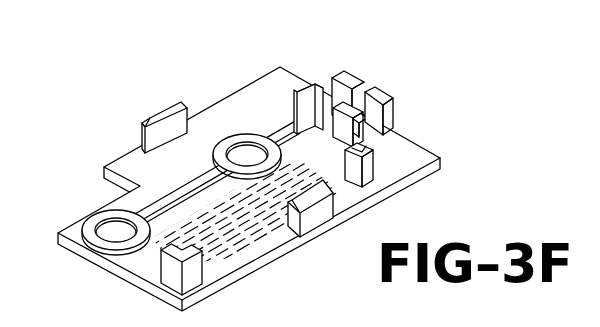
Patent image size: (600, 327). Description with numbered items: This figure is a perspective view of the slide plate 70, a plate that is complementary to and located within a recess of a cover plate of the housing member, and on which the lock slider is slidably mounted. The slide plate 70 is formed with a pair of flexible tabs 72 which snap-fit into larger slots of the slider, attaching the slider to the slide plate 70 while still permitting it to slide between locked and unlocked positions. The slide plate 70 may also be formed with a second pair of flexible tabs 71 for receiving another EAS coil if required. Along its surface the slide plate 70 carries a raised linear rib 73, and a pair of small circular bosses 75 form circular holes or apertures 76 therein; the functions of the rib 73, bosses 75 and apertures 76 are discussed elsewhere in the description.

The slide plate 70 is at (432, 142).
The flexible tabs 71 is at (343, 69).
The flexible tabs 72 is at (147, 116).
The raised linear rib 73 is at (281, 131).
The circular bosses 75 is at (245, 156).
The circular holes 76 is at (249, 151).